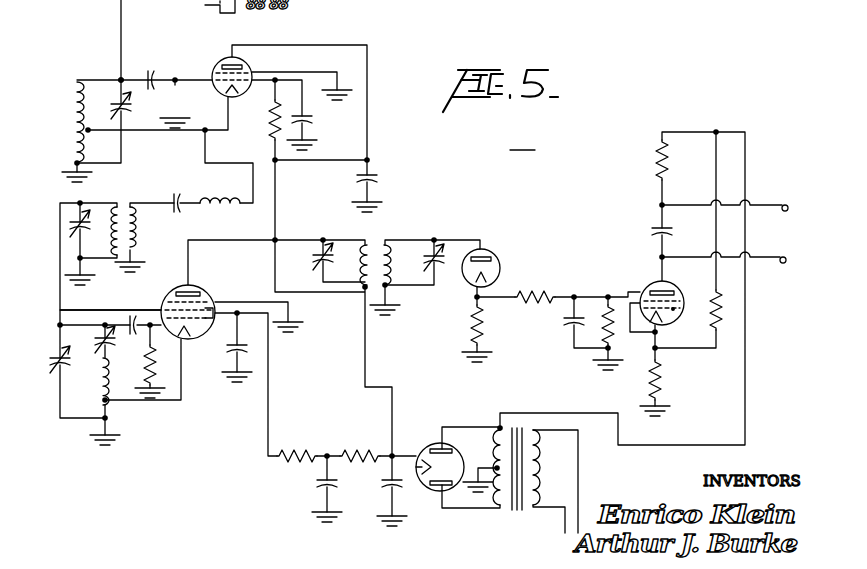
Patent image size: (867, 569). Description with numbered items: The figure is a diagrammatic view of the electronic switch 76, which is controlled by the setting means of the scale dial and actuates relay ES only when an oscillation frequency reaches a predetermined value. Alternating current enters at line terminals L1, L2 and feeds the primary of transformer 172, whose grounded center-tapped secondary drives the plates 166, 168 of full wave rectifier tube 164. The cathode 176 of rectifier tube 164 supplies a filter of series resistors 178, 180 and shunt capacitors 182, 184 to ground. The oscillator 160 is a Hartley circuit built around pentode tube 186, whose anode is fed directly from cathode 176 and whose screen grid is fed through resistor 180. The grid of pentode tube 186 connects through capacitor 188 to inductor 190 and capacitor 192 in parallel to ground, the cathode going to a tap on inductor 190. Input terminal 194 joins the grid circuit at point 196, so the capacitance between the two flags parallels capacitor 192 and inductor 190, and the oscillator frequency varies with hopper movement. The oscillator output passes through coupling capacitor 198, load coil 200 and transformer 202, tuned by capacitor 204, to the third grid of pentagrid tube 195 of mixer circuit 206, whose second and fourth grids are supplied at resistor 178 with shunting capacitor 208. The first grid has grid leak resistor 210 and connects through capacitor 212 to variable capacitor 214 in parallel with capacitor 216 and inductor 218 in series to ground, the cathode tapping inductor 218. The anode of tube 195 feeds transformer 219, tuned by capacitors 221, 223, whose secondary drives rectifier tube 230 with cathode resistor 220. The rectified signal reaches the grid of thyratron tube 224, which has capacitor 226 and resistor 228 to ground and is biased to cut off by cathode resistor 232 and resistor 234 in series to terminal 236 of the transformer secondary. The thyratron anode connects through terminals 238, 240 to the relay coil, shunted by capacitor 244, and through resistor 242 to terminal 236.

The input terminal 194 is at (121, 6).
The point 196 is at (120, 79).
The capacitor 188 is at (148, 77).
The oscillator 160 is at (205, 67).
The pentode tube 186 is at (250, 71).
The inductor 190 is at (72, 104).
The capacitor 192 is at (122, 128).
The resistor 180 is at (272, 118).
The shunt capacitor 182 is at (312, 126).
The resistor 178 is at (374, 178).
The transformer 202 is at (124, 195).
The coupling capacitor 198 is at (177, 196).
The load coil 200 is at (230, 198).
The tuning capacitor 204 is at (74, 228).
The pentagrid tube 195 is at (228, 284).
The mixer circuit 206 is at (152, 303).
The capacitor 212 is at (127, 319).
The variable capacitor 214 is at (53, 357).
The capacitor 216 is at (100, 355).
The inductor 218 is at (100, 405).
The grid leak resistor 210 is at (155, 375).
The shunting capacitor 208 is at (232, 348).
The tuning capacitor 221 is at (314, 254).
The transformer 219 is at (376, 240).
The tuning capacitor 223 is at (442, 270).
The resistor 220 is at (470, 332).
The rectifier tube 230 is at (492, 253).
The cathode resistor 232 is at (548, 284).
The thyratron tube 224 is at (647, 292).
The capacitor 226 is at (565, 322).
The resistor 228 is at (613, 345).
The resistor 234 is at (721, 322).
The resistor 242 is at (656, 168).
The capacitor 244 is at (654, 235).
The terminal 238 is at (790, 200).
The terminal 240 is at (788, 252).
The electronic switch 76 is at (523, 140).
The terminal 236 is at (500, 426).
The transformer 172 is at (519, 428).
The full wave rectifier tube 164 is at (426, 457).
The plate 166 is at (446, 448).
The plate 168 is at (444, 486).
The cathode 176 is at (428, 482).
The shunt capacitor 184 is at (388, 486).
The line terminal L1 is at (565, 533).
The line terminal L2 is at (579, 476).